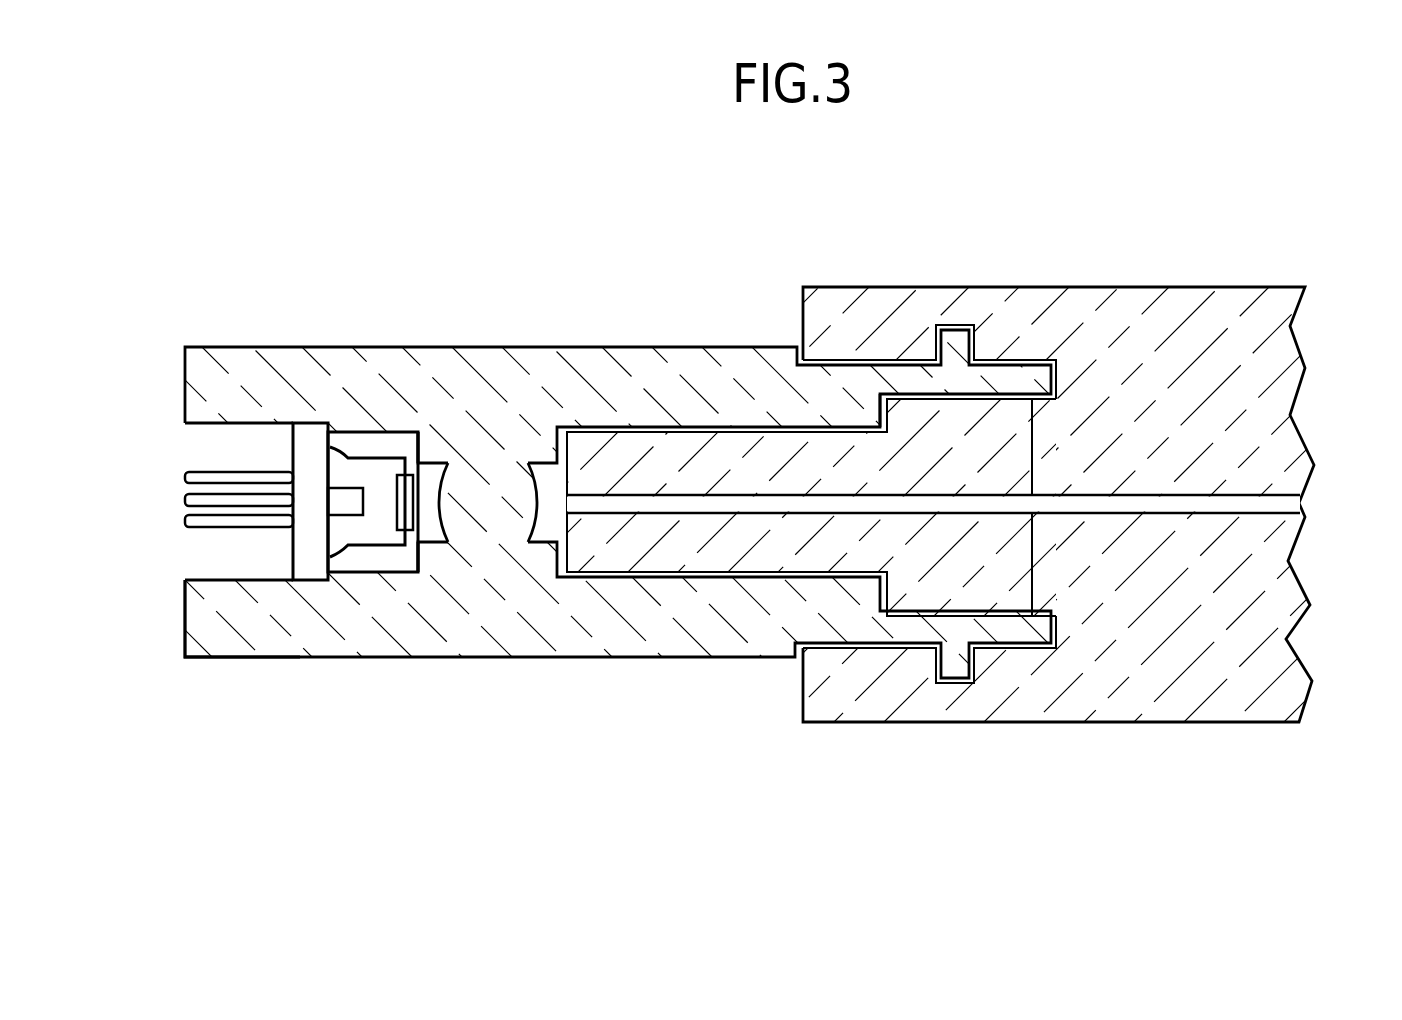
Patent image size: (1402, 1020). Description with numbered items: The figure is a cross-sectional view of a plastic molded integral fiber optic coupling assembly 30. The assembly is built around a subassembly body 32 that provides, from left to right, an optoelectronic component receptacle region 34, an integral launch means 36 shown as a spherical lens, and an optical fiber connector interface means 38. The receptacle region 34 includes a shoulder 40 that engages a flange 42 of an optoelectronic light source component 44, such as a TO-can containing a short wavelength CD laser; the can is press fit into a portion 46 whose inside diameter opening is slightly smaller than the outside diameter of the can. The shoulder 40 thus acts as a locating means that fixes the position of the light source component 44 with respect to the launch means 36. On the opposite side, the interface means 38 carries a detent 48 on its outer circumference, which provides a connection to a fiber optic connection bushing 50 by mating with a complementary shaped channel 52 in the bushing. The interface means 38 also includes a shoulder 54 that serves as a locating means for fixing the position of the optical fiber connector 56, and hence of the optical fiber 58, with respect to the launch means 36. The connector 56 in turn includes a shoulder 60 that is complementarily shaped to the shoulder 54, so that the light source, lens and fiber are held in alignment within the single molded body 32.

The coupling assembly 30 is at (617, 282).
The subassembly body 32 is at (440, 347).
The optoelectronic component receptacle region 34 is at (198, 445).
The integral launch means 36 is at (487, 518).
The optical fiber connector interface means 38 is at (793, 612).
The shoulder 40 is at (303, 421).
The flange 42 is at (383, 607).
The optoelectronic light source component 44 is at (302, 544).
The portion 46 is at (257, 628).
The detent 48 is at (970, 685).
The fiber optic connection bushing 50 is at (1208, 322).
The complementary shaped channel 52 is at (955, 325).
The shoulder 54 is at (880, 410).
The optical fiber connector 56 is at (1001, 570).
The optical fiber 58 is at (1273, 507).
The shoulder 60 is at (889, 412).